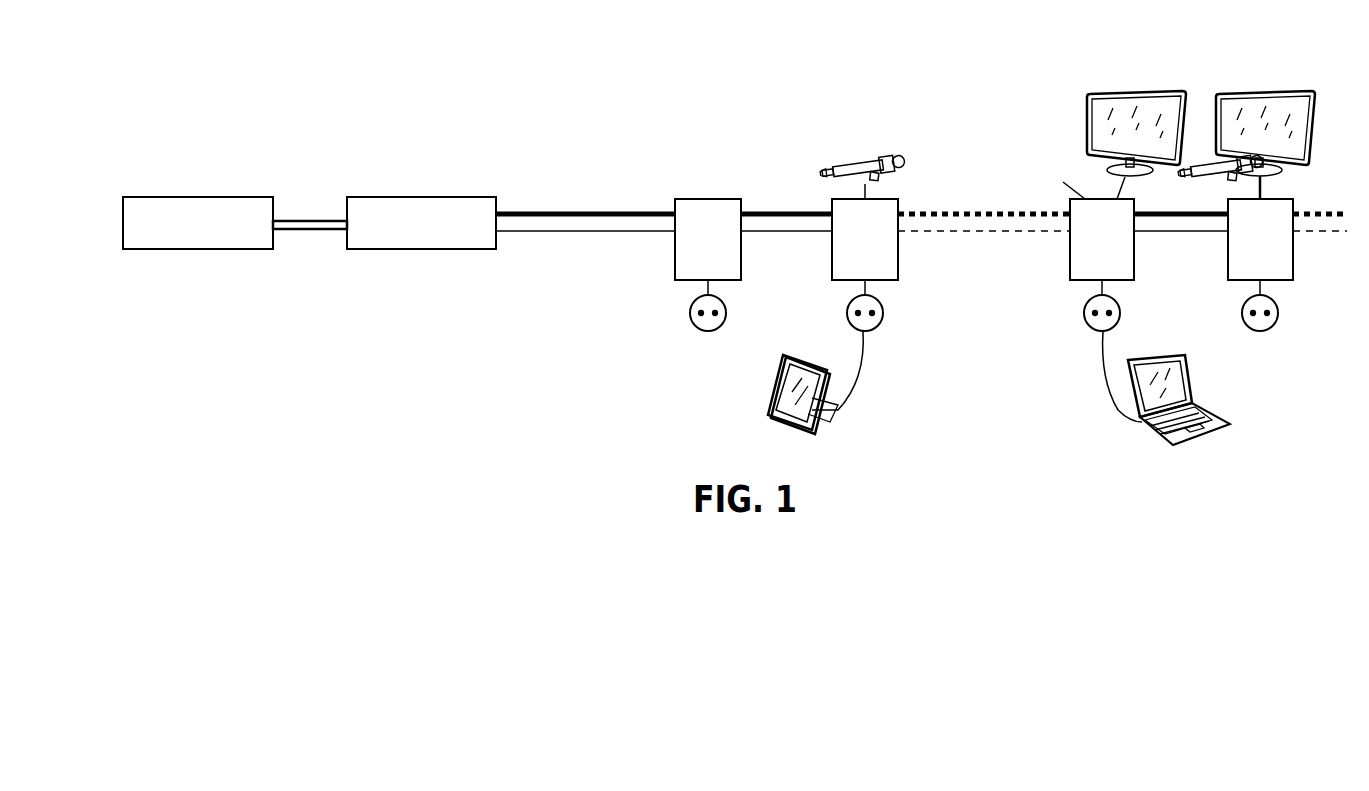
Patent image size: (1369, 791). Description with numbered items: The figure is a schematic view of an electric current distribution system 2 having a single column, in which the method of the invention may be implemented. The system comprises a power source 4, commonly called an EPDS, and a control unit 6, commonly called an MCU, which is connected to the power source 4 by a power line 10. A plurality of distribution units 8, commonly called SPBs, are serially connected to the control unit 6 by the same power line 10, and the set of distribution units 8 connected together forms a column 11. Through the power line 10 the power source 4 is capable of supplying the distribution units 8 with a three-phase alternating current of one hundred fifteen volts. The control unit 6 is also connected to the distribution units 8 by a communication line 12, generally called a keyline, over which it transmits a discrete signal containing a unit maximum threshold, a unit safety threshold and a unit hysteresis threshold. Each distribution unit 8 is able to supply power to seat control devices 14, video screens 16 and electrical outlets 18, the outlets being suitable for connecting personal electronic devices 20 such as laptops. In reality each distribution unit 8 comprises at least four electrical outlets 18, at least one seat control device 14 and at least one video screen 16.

The electric current distribution system 2 is at (427, 472).
The power source 4 is at (191, 234).
The control unit 6 is at (414, 234).
The distribution unit 8 is at (701, 250).
The power line 10 is at (302, 221).
The column 11 is at (632, 325).
The communication line 12 is at (577, 234).
The seat control device 14 is at (847, 167).
The video screen 16 is at (1108, 95).
The electrical outlet 18 is at (699, 330).
The personal electronic device 20 is at (788, 353).